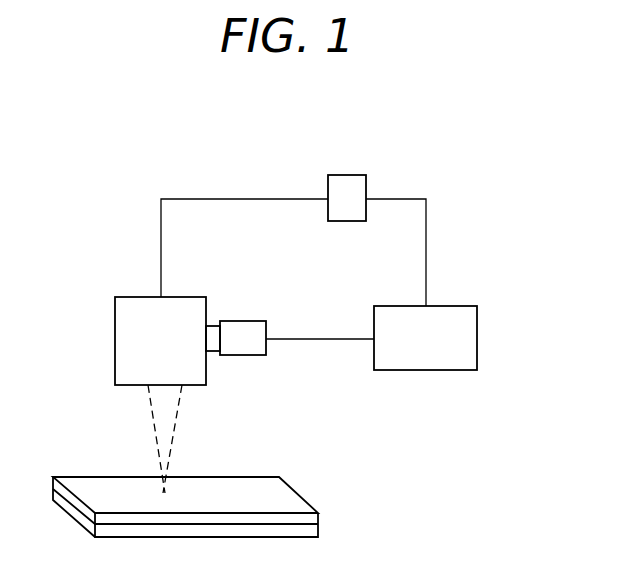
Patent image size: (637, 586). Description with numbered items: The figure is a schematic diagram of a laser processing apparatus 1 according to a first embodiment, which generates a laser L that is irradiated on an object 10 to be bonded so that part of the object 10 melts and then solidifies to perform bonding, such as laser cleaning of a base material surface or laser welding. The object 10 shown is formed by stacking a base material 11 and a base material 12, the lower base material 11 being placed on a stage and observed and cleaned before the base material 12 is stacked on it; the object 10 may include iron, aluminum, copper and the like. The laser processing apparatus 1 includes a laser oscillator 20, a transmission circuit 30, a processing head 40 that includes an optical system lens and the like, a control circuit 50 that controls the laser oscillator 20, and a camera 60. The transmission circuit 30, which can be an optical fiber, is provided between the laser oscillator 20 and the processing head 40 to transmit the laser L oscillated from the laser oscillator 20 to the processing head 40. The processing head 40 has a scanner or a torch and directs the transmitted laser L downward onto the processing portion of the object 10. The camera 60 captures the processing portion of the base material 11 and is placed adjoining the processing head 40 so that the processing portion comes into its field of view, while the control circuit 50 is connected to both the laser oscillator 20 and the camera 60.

The laser processing apparatus 1 is at (98, 203).
The object 10 is at (271, 516).
The base material 11 is at (318, 530).
The base material 12 is at (318, 515).
The laser oscillator 20 is at (366, 190).
The transmission circuit 30 is at (215, 199).
The processing head 40 is at (115, 340).
The control circuit 50 is at (477, 317).
The camera 60 is at (266, 330).
The laser L is at (155, 440).